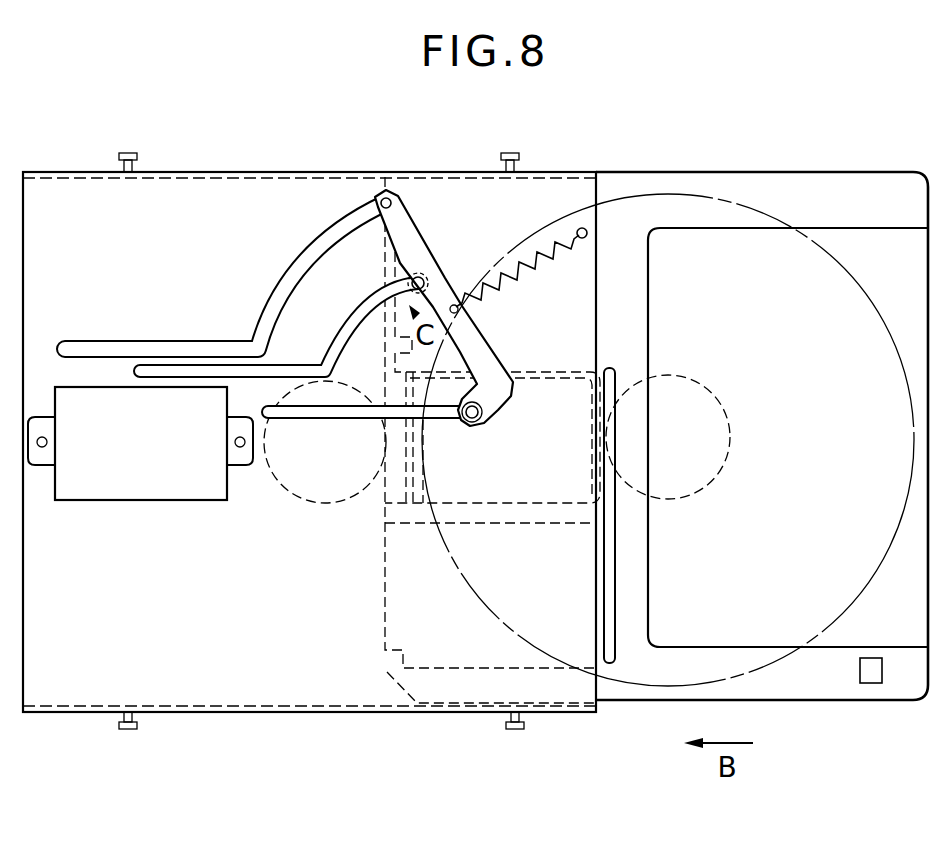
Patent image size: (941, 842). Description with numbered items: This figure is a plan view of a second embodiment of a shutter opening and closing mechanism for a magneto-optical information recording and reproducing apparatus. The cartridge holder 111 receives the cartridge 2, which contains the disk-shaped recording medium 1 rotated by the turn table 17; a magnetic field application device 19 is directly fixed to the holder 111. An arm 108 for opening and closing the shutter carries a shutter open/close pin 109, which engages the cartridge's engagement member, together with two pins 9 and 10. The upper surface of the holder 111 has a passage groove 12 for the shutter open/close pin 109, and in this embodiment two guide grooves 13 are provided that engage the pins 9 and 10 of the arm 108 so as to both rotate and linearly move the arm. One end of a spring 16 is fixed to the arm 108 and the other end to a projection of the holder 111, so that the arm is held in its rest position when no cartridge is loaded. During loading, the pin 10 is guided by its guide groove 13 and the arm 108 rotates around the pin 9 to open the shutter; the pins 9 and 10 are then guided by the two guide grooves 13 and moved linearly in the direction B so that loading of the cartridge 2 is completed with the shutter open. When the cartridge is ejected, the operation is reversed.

The disk-shaped recording medium 1 is at (787, 240).
The cartridge 2 is at (888, 183).
The pin 9 is at (480, 428).
The pin 10 is at (422, 277).
The passage groove 12 is at (318, 237).
The guide groove 13 is at (355, 313).
The spring 16 is at (567, 227).
The turn table 17 is at (283, 477).
The magnetic field application device 19 is at (75, 397).
The arm 108 is at (405, 262).
The shutter open/close pin 109 is at (383, 197).
The cartridge holder 111 is at (60, 190).